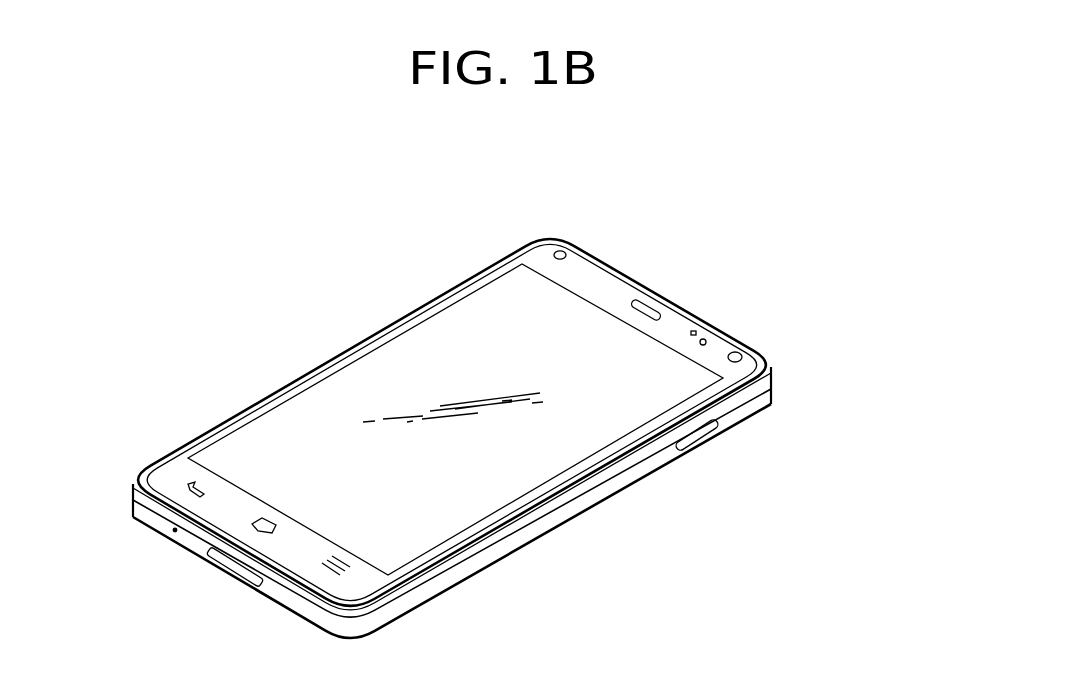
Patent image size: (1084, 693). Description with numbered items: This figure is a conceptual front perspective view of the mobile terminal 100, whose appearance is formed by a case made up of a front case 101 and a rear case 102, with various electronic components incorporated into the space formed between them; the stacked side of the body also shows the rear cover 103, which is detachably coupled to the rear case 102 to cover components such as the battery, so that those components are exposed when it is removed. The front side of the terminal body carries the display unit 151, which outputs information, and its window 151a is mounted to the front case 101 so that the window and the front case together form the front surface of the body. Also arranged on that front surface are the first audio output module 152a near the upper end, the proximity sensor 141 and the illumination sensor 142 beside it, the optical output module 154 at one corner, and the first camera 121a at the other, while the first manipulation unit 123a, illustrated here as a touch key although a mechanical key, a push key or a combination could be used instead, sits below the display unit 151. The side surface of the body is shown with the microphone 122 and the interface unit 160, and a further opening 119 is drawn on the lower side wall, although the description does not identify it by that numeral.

The mobile terminal 100 is at (343, 294).
The front case 101 is at (773, 372).
The rear case 102 is at (768, 391).
The rear cover 103 is at (762, 404).
The interface unit 119 is at (220, 564).
The first camera 121a is at (741, 355).
The microphone 122 is at (176, 532).
The first manipulation unit 123a is at (338, 564).
The proximity sensor 141 is at (706, 340).
The illumination sensor 142 is at (696, 332).
The display unit 151 is at (324, 407).
The window 151a is at (482, 318).
The first audio output module 152a is at (645, 305).
The optical output module 154 is at (566, 253).
The interface unit 160 is at (700, 437).